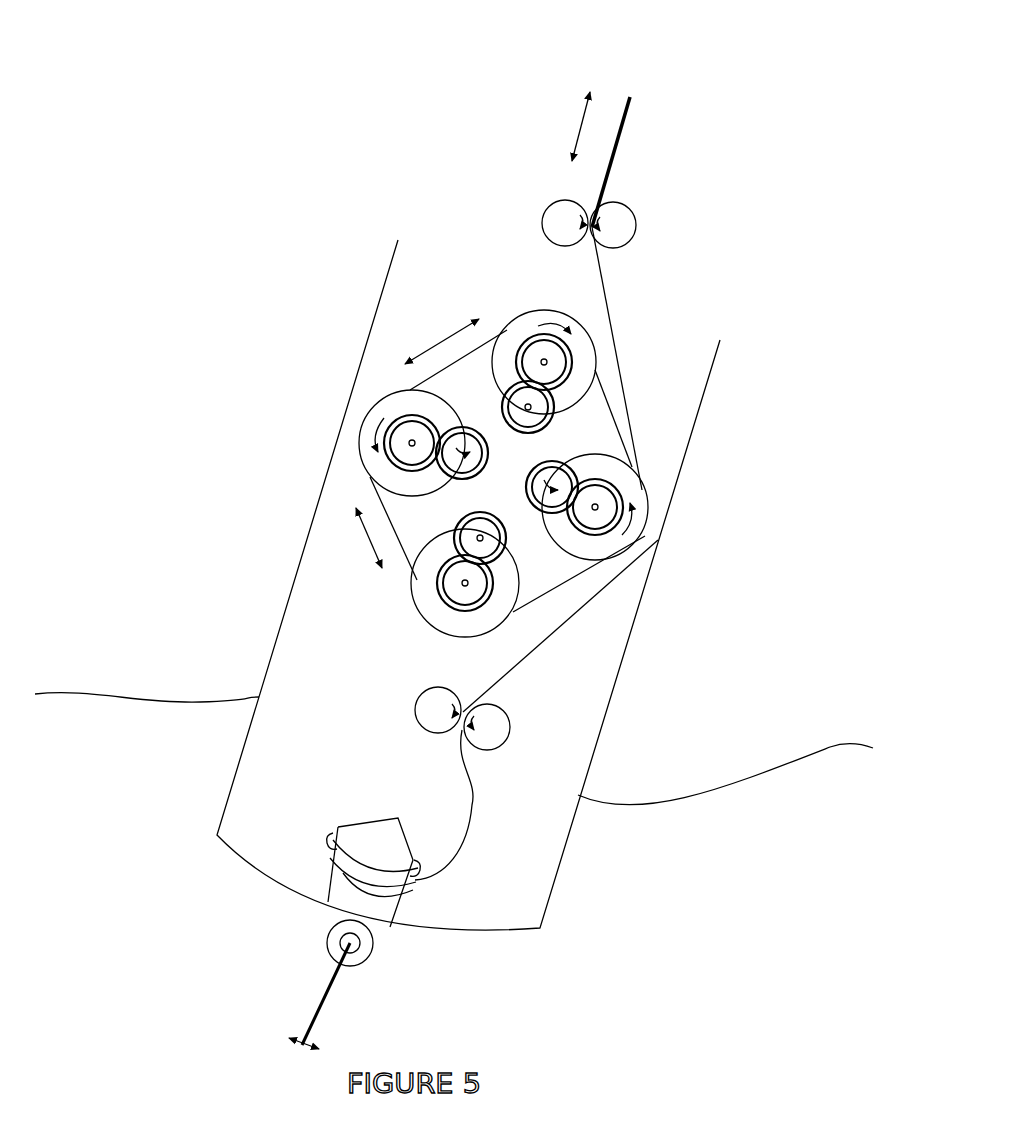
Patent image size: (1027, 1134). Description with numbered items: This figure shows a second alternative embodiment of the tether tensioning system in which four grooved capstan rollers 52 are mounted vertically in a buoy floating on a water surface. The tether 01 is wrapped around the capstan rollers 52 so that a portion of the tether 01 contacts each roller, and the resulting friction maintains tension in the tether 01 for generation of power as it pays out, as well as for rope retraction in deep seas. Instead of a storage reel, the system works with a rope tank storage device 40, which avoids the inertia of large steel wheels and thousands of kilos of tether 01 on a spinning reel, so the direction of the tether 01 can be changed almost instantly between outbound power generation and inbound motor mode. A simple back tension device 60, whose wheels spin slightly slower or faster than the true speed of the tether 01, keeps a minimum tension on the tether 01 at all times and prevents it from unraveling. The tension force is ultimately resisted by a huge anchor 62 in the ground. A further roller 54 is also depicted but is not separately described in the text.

The tether 01 is at (627, 92).
The back tension device 60 is at (621, 204).
The capstan rollers 52 is at (630, 479).
The roller 54 is at (547, 517).
The rope tank storage device 40 is at (397, 860).
The anchor 62 is at (317, 996).